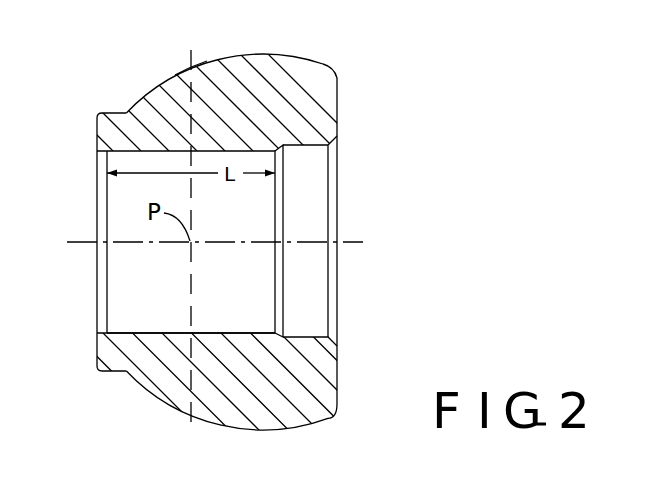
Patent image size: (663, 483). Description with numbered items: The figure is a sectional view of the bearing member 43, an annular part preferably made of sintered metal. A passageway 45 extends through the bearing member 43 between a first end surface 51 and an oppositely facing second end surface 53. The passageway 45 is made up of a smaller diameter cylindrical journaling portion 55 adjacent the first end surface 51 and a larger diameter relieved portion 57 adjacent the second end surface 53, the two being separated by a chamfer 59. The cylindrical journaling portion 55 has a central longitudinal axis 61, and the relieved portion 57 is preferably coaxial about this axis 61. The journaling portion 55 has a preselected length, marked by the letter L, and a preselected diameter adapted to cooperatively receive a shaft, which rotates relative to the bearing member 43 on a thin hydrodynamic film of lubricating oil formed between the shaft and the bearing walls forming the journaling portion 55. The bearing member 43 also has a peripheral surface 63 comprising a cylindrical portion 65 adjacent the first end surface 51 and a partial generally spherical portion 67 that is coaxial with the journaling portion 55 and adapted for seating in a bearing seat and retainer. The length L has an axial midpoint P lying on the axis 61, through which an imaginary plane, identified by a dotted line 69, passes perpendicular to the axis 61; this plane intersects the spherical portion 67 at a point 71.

The bearing member 43 is at (319, 425).
The passageway 45 is at (168, 281).
The first end surface 51 is at (100, 361).
The second end surface 53 is at (340, 369).
The cylindrical journaling portion 55 is at (237, 332).
The relieved portion 57 is at (312, 336).
The chamfer 59 is at (283, 333).
The central longitudinal axis 61 is at (353, 241).
The peripheral surface 63 is at (330, 64).
The cylindrical portion 65 is at (110, 112).
The partial spherical portion 67 is at (293, 56).
The dotted line 69 is at (190, 62).
The point 71 is at (191, 67).